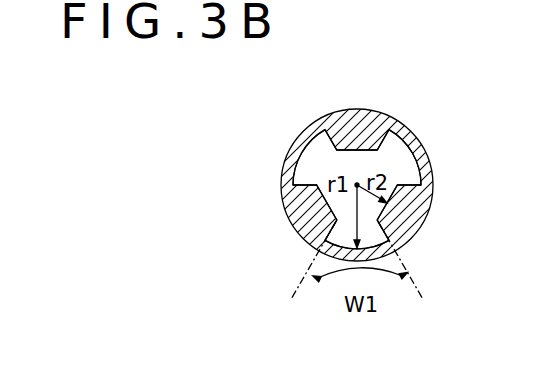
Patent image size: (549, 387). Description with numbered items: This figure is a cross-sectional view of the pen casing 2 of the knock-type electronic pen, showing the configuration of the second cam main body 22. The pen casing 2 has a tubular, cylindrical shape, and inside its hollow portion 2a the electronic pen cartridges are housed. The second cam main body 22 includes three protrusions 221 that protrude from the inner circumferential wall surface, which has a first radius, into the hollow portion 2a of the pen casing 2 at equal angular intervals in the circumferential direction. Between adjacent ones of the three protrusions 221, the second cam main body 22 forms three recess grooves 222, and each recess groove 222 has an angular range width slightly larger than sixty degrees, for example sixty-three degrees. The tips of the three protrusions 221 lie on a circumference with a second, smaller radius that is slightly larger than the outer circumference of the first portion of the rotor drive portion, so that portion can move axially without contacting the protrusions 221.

The pen casing 2 is at (408, 128).
The hollow portion 2a is at (359, 176).
The second cam main body 22 is at (235, 75).
The protrusions 221 is at (342, 116).
The recess grooves 222 is at (311, 157).